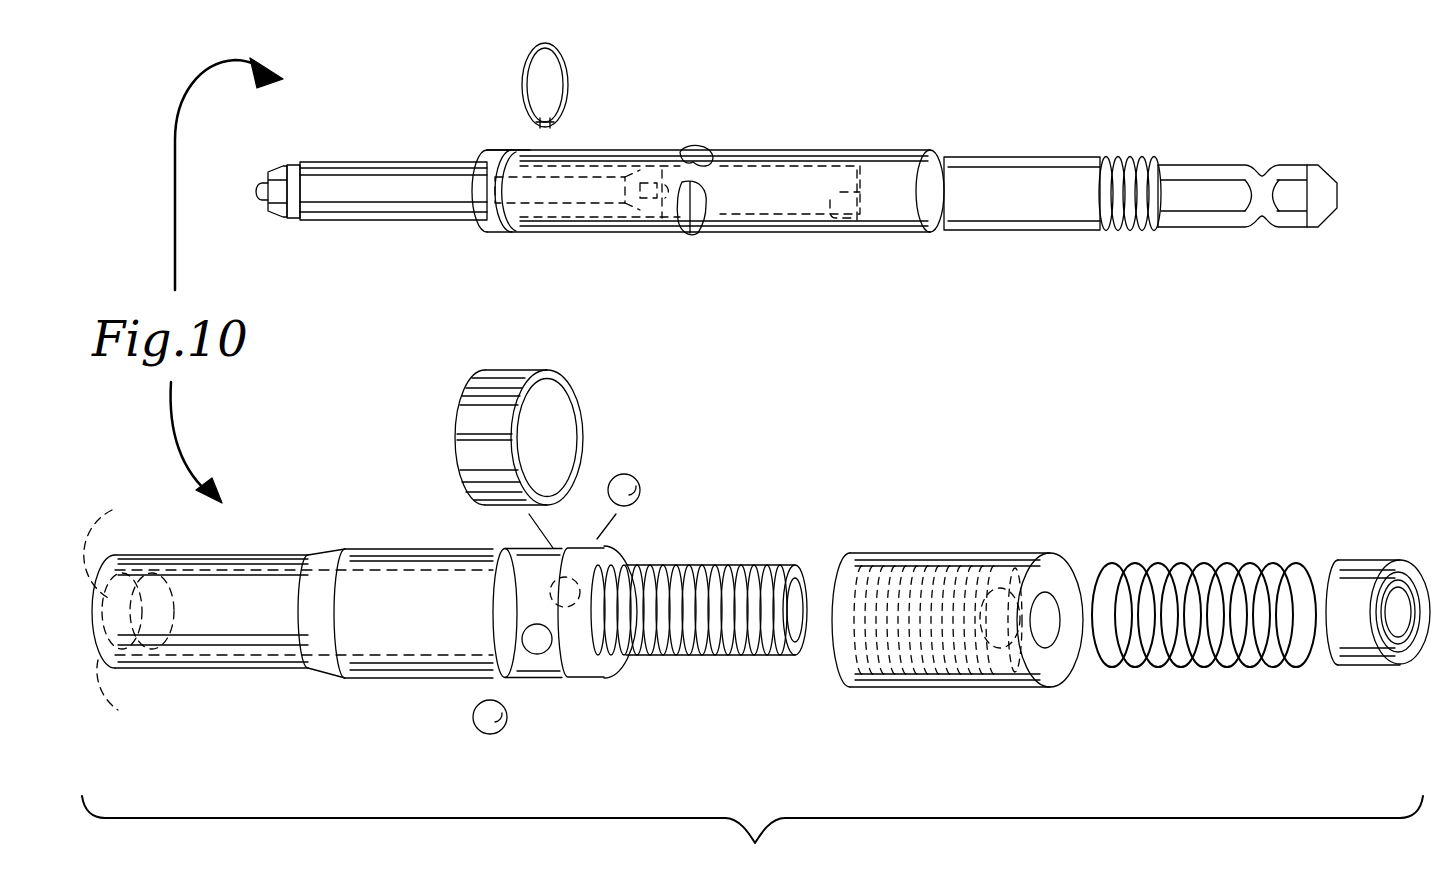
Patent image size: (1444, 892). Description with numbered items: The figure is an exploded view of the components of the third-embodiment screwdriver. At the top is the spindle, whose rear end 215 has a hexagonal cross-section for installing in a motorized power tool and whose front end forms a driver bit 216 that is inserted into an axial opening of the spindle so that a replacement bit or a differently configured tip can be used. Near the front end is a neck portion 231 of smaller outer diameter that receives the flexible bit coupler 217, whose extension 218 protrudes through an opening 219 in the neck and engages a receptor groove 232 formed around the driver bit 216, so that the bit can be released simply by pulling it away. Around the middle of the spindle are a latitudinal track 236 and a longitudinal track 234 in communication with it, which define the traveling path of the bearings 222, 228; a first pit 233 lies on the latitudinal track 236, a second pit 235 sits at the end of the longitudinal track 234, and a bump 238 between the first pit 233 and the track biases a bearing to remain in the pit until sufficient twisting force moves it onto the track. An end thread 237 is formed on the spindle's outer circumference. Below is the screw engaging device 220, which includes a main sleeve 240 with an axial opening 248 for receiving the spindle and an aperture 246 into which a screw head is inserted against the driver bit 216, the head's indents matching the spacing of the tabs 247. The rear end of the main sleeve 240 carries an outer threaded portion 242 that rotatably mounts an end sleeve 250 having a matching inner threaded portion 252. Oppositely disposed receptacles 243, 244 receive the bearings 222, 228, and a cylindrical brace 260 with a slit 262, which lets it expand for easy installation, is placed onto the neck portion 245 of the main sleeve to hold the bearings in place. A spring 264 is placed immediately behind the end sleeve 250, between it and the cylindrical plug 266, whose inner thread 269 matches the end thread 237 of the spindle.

The rear end 215 is at (1297, 170).
The driver bit 216 is at (380, 212).
The bit coupler 217 is at (521, 66).
The extension 218 is at (548, 110).
The opening 219 is at (517, 148).
The screw engaging device 220 is at (752, 840).
The bearing 222 is at (632, 475).
The bearing 228 is at (482, 734).
The neck portion 231 is at (512, 238).
The receptor groove 232 is at (502, 195).
The first pit 233 is at (707, 200).
The longitudinal track 234 is at (787, 170).
The second pit 235 is at (847, 237).
The latitudinal track 236 is at (702, 152).
The end thread 237 is at (1128, 157).
The bump 238 is at (689, 205).
The main sleeve 240 is at (352, 692).
The outer threaded portion 242 is at (730, 657).
The receptacle 243 is at (527, 636).
The receptacle 244 is at (640, 553).
The neck portion 245 is at (552, 670).
The aperture 246 is at (112, 515).
The tabs 247 is at (131, 693).
The axial opening 248 is at (789, 606).
The end sleeve 250 is at (928, 686).
The inner threaded portion 252 is at (923, 587).
The brace 260 is at (480, 467).
The slit 262 is at (455, 436).
The spring 264 is at (1180, 665).
The plug 266 is at (1363, 648).
The internal threads 269 is at (1400, 610).